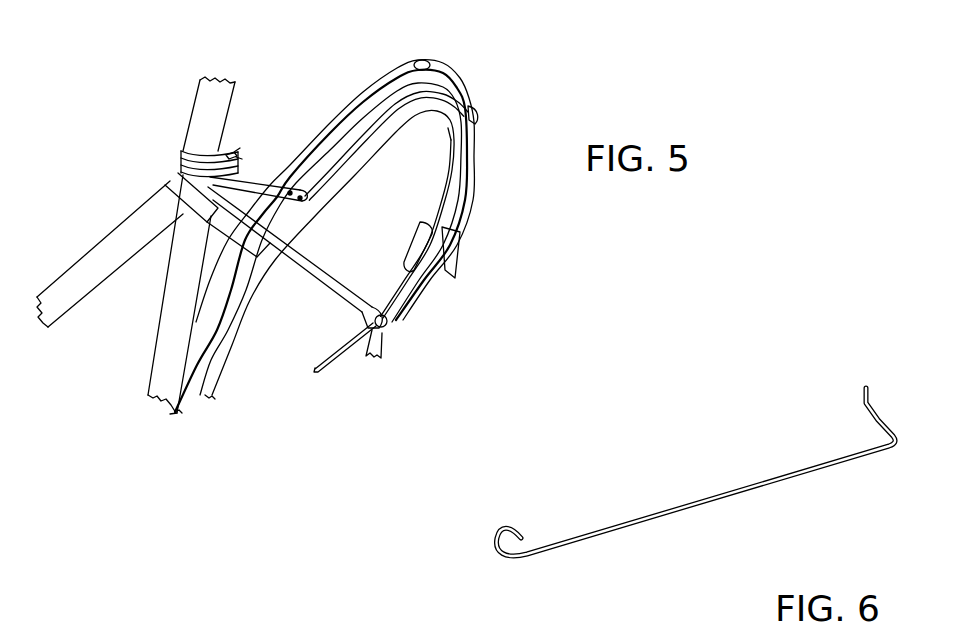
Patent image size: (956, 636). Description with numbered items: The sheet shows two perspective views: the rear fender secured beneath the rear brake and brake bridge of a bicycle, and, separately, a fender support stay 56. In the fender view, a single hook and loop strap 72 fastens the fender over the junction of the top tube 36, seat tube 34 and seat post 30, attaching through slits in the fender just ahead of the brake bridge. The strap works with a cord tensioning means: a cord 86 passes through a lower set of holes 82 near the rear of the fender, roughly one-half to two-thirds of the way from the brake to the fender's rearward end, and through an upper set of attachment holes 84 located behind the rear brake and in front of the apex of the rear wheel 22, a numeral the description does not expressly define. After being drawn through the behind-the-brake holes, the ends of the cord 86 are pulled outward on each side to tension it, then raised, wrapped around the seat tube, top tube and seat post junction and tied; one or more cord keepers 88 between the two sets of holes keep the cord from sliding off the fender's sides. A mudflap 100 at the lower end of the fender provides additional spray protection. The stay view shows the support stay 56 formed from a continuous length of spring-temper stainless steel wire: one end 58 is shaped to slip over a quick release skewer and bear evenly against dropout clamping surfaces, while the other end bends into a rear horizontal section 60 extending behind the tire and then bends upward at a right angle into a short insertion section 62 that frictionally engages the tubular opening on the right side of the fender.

In FIG. 5, the wheel rim 22 is at (213, 310).
In FIG. 5, the seat post 30 is at (213, 108).
In FIG. 5, the seat tube 34 is at (168, 362).
In FIG. 5, the top tube 36 is at (128, 242).
In FIG. 5, the fender support stay 56 is at (410, 298).
In FIG. 6, the fender support stay 56 is at (729, 534).
In FIG. 6, the end of the support stay 58 is at (517, 535).
In FIG. 6, the rear horizontal section 60 is at (878, 422).
In FIG. 6, the insertion section 62 is at (862, 395).
In FIG. 5, the strap 72 is at (180, 182).
In FIG. 5, the holes 82 is at (478, 114).
In FIG. 5, the attachment holes 84 is at (325, 197).
In FIG. 5, the cord 86 is at (258, 188).
In FIG. 5, the cord keepers 88 is at (430, 62).
In FIG. 5, the mudflap 100 is at (450, 272).